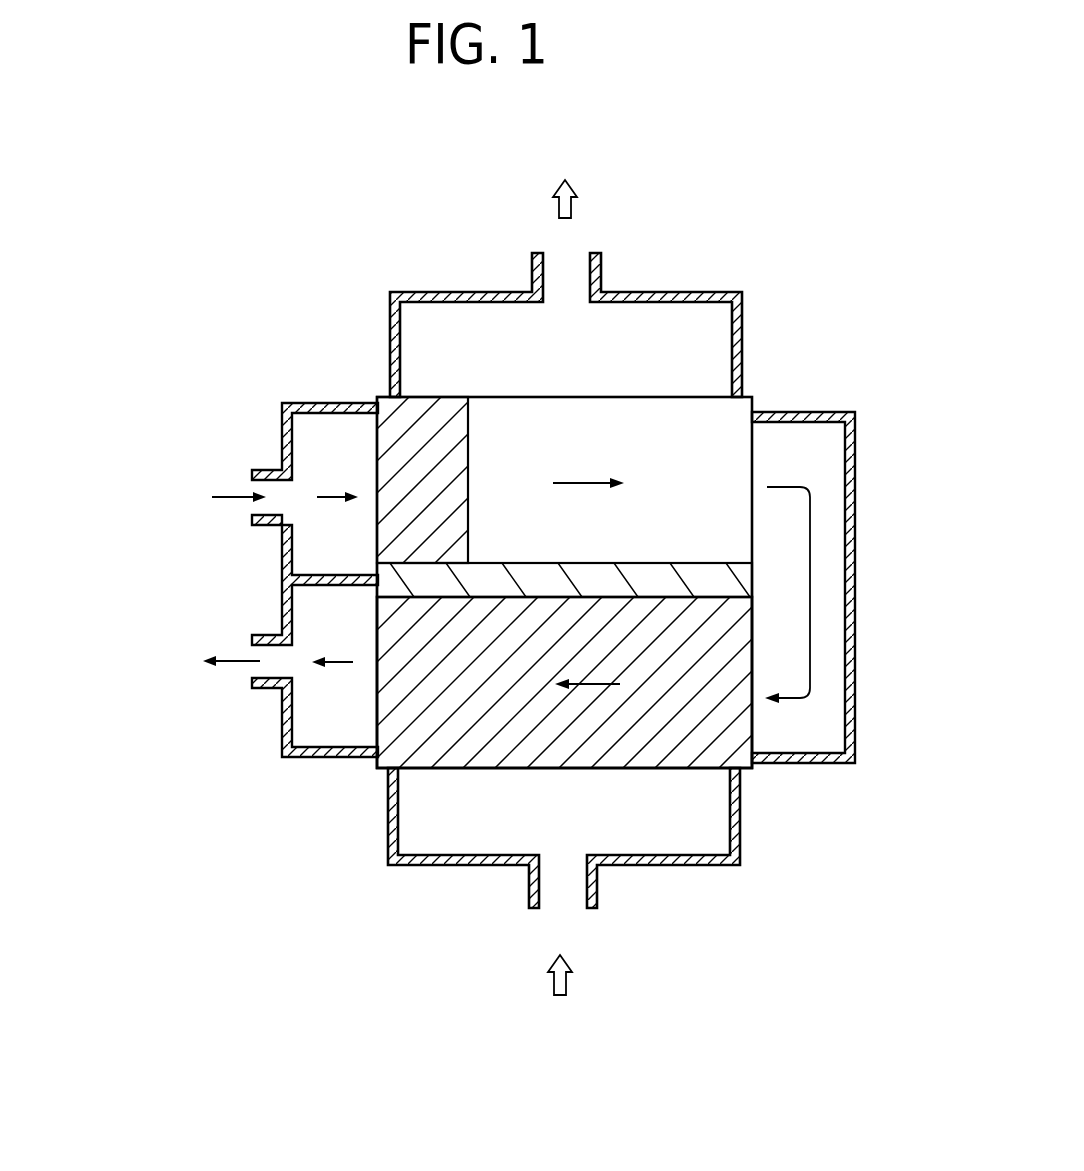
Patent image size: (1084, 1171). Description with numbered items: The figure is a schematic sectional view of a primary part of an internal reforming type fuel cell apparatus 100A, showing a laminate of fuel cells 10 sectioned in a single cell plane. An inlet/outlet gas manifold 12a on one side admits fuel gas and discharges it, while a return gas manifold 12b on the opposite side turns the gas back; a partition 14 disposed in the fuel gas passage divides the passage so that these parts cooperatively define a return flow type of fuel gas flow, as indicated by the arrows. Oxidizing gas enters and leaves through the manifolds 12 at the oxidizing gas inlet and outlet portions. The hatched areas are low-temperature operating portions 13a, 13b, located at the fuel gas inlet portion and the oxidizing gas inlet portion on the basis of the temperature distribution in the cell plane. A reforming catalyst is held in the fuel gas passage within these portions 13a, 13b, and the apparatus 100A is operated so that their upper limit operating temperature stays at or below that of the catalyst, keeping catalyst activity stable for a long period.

The fuel cell apparatus 100A is at (426, 886).
The fuel cell stack 10 is at (754, 397).
The oxidizing gas housing 12 is at (705, 297).
The inlet/outlet gas manifold 12a is at (282, 735).
The return gas manifold 12b is at (853, 702).
The low-temperature operating portion 13a is at (388, 408).
The low-temperature operating portion 13b is at (392, 758).
The partition 14 is at (736, 582).